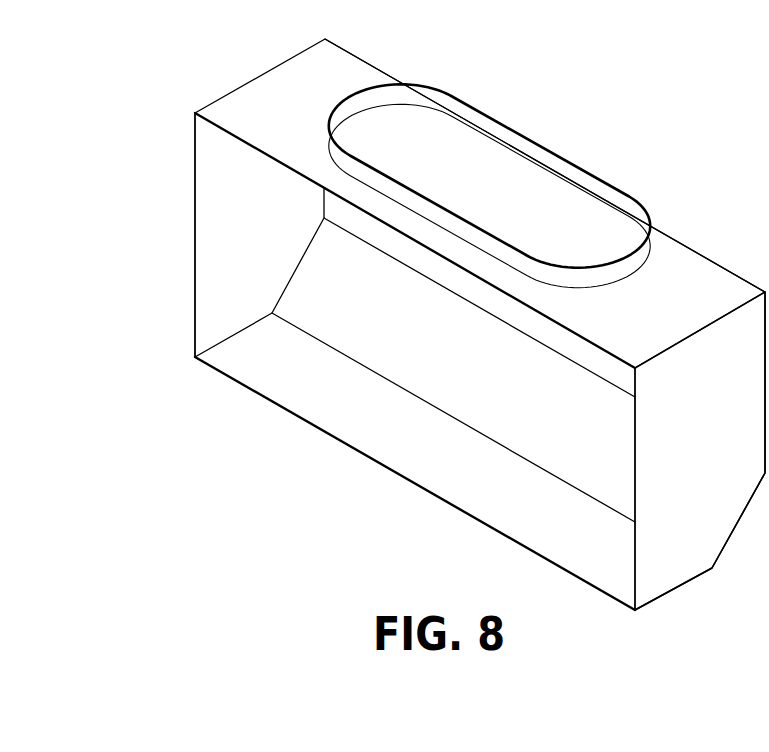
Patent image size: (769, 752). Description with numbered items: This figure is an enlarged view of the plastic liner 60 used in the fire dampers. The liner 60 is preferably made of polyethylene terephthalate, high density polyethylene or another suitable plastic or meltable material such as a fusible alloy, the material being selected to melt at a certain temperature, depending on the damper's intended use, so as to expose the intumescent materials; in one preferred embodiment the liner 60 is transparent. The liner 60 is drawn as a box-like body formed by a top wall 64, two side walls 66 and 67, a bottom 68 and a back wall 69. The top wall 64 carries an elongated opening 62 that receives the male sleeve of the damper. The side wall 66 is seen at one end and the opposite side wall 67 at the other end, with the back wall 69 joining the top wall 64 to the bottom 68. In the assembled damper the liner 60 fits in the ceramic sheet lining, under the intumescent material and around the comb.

The plastic liner 60 is at (153, 150).
The opening 62 is at (493, 187).
The top wall 64 is at (690, 297).
The side wall 66 is at (274, 242).
The side wall 67 is at (724, 450).
The bottom 68 is at (474, 484).
The back wall 69 is at (485, 386).